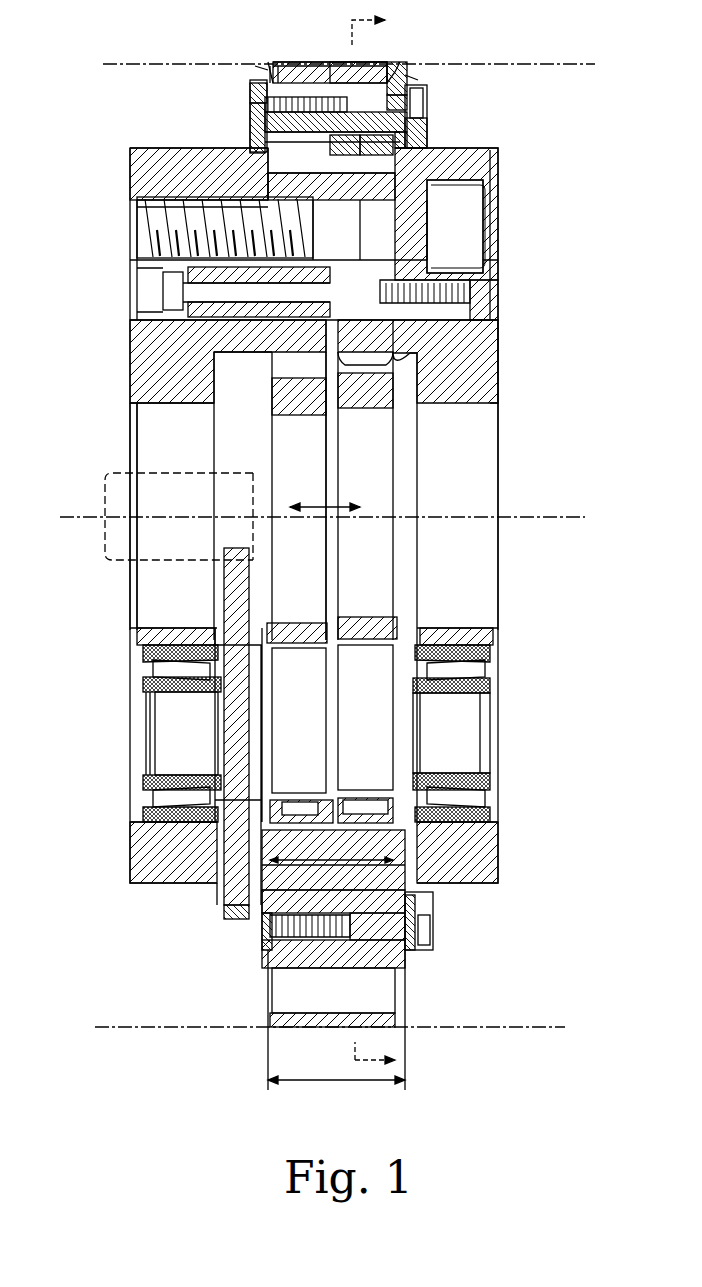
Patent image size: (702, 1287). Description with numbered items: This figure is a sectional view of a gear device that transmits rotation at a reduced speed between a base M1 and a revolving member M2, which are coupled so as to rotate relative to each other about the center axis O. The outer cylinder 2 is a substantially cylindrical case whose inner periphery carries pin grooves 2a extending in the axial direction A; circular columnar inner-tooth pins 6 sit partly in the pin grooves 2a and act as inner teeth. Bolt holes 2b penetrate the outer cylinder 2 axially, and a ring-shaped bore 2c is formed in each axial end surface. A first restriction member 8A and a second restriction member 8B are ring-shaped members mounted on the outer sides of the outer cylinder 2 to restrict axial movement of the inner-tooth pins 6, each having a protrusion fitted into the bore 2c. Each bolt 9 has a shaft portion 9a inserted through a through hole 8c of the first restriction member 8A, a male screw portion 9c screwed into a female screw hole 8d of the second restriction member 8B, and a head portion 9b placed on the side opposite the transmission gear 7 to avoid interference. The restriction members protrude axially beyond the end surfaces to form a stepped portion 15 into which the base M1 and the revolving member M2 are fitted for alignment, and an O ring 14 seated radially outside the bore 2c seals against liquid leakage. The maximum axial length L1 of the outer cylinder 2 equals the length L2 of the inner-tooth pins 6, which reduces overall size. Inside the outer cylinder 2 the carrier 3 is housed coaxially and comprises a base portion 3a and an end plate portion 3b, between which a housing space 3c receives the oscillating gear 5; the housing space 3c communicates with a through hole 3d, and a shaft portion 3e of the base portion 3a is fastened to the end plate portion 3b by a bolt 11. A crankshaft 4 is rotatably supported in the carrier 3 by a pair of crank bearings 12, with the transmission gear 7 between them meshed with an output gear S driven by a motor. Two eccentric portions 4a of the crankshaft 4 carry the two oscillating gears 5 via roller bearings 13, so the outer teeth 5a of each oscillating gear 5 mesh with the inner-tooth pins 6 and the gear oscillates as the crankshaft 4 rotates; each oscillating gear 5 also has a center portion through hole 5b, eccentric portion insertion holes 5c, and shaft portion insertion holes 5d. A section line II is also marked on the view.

The outer cylinder 2 is at (372, 68).
The pin grooves 2a is at (336, 205).
The bolt holes 2b is at (363, 70).
The bore 2c is at (430, 104).
The carrier 3 is at (480, 150).
The base portion 3a is at (485, 164).
The end plate portion 3b is at (135, 152).
The housing space 3c is at (420, 473).
The through hole 3d is at (140, 425).
The shaft portion 3e is at (165, 186).
The crankshaft 4 is at (465, 725).
The eccentric portions 4a is at (292, 690).
The oscillating gear 5 is at (258, 118).
The outer teeth 5a is at (258, 137).
The center portion through hole 5b is at (348, 405).
The eccentric portion insertion holes 5c is at (381, 800).
The shaft portion insertion holes 5d is at (475, 350).
The inner-tooth pins 6 is at (283, 72).
The transmission gear 7 is at (212, 588).
The first restriction member 8A is at (418, 74).
The second restriction member 8B is at (255, 66).
The through hole 8c is at (415, 133).
The female screw hole 8d is at (258, 90).
The bolts 9 is at (427, 92).
The shaft portion 9a is at (365, 200).
The head portion 9b is at (427, 118).
The male screw portion 9c is at (303, 66).
The bolt 11 is at (468, 229).
The crank bearings 12 is at (150, 672).
The roller bearings 13 is at (312, 795).
The O ring 14 is at (278, 72).
The stepped portion 15 is at (265, 70).
The center axis O is at (585, 517).
The output gear S is at (255, 487).
The axial direction A is at (305, 500).
The maximum length L1 is at (336, 1058).
The length L2 is at (290, 825).
The base M1 is at (150, 78).
The revolving member M2 is at (532, 75).
The section line II is at (367, 536).